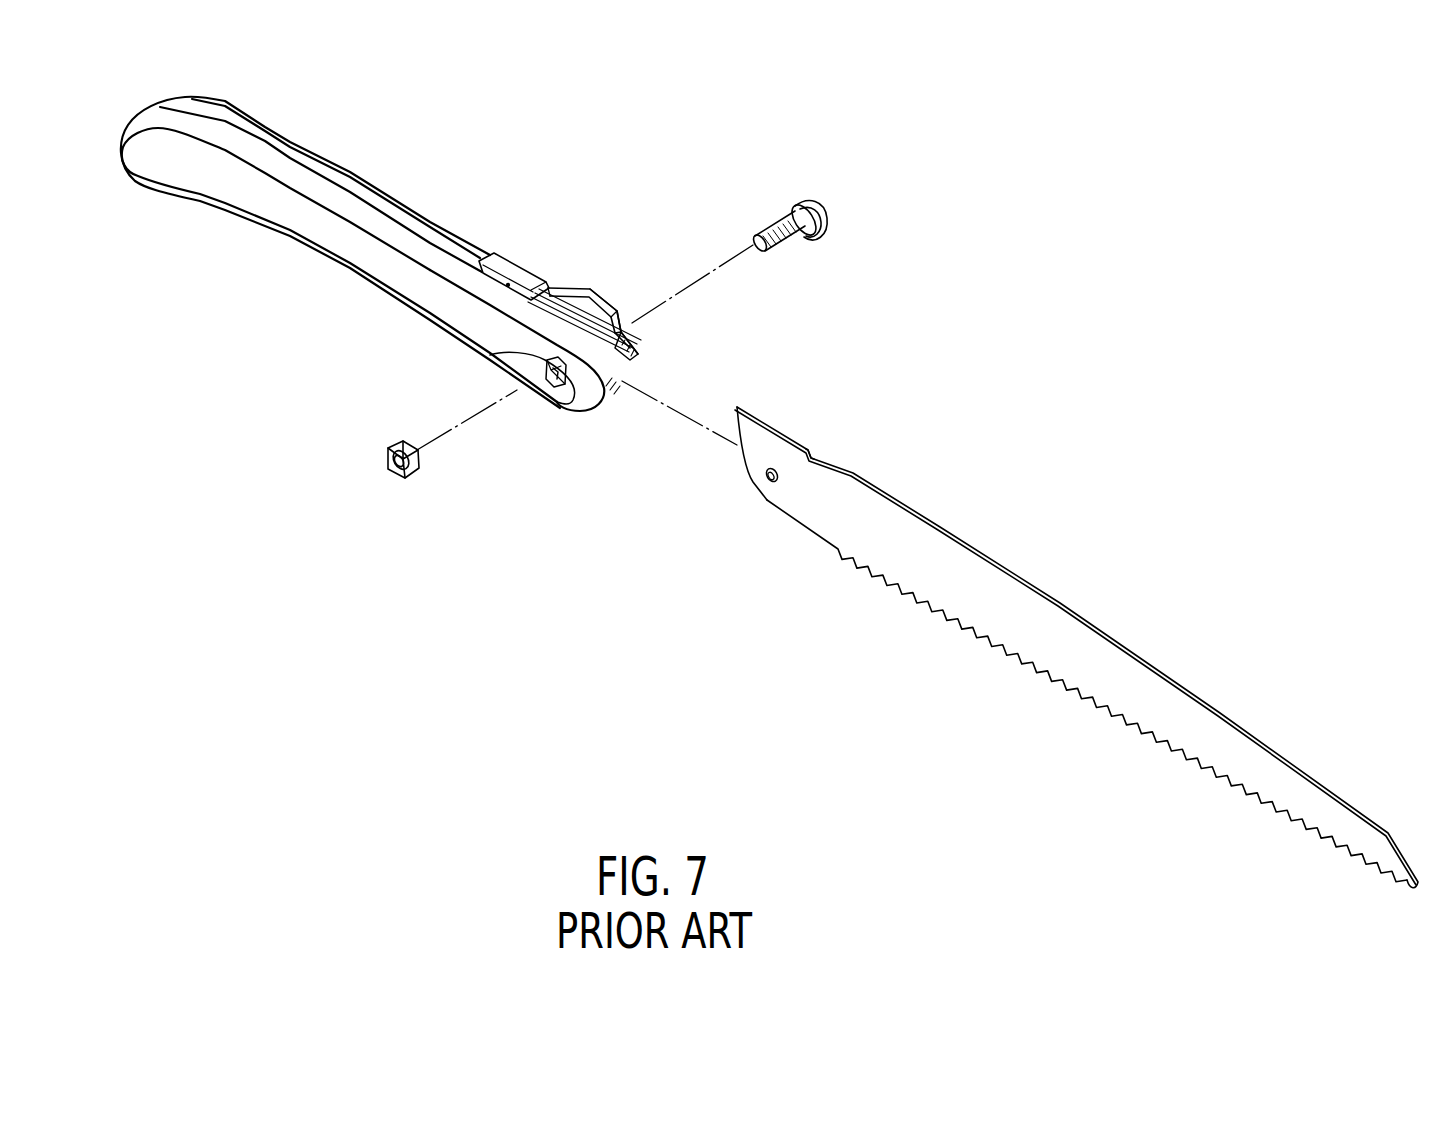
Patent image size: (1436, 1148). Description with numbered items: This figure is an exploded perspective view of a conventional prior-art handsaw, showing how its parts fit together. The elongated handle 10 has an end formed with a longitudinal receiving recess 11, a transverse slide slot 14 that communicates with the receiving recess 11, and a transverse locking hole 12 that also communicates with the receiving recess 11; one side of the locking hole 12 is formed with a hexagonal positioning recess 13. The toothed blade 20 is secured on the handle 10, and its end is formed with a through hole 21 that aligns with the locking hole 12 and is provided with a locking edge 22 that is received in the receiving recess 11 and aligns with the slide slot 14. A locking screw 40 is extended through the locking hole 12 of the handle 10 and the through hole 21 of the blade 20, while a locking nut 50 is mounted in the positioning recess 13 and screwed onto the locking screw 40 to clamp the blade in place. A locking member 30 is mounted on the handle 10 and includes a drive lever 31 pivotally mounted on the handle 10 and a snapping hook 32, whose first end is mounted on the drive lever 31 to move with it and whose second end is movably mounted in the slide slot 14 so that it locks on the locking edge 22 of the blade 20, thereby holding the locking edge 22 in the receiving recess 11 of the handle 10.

The handle 10 is at (436, 215).
The longitudinal receiving recess 11 is at (633, 350).
The transverse locking hole 12 is at (490, 356).
The hexagonal positioning recess 13 is at (557, 386).
The transverse slide slot 14 is at (630, 345).
The blade 20 is at (910, 477).
The through hole 21 is at (767, 476).
The locking edge 22 is at (813, 450).
The locking member 30 is at (555, 267).
The drive lever 31 is at (490, 257).
The snapping hook 32 is at (610, 308).
The locking screw 40 is at (830, 186).
The locking nut 50 is at (368, 484).